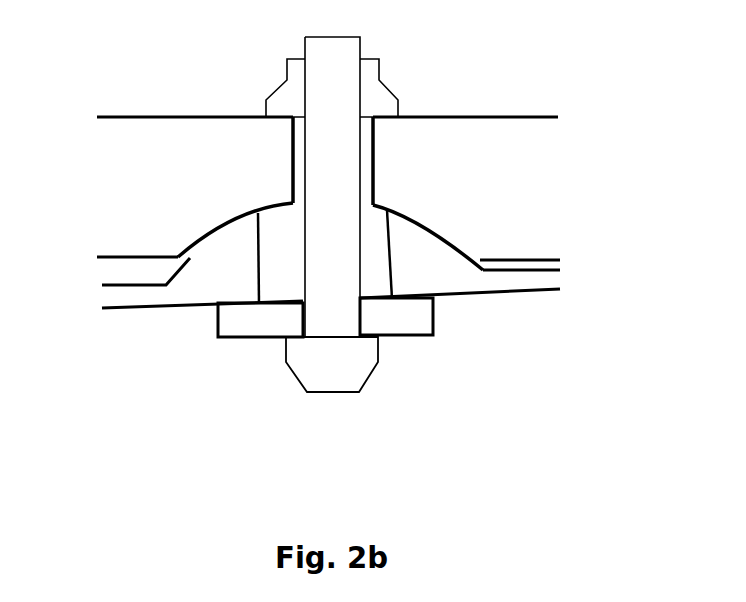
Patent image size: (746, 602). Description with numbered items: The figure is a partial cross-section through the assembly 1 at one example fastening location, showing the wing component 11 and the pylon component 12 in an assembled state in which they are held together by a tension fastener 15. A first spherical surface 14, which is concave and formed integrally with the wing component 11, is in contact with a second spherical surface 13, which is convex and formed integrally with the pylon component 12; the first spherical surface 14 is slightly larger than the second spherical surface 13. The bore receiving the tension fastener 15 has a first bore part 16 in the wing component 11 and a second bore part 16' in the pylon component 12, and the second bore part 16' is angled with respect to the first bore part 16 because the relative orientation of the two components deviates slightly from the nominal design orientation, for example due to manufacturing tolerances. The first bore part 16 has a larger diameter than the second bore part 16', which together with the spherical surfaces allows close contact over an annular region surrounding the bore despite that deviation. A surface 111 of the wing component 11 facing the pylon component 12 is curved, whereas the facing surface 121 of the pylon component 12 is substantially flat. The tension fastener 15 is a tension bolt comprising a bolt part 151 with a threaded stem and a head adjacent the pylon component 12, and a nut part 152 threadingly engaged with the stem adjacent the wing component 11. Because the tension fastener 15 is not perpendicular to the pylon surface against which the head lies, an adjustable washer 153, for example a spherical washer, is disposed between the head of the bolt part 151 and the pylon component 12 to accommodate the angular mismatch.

The assembly 1 is at (613, 93).
The wing component 11 is at (175, 193).
The surface of the wing component 111 is at (140, 257).
The pylon component 12 is at (137, 297).
The surface of the pylon component 121 is at (517, 272).
The second spherical surface 13 is at (443, 233).
The first spherical surface 14 is at (223, 218).
The tension fastener 15 is at (387, 363).
The bolt part 151 is at (338, 335).
The nut part 152 is at (284, 100).
The washer 153 is at (237, 320).
The first bore part 16 is at (424, 178).
The second bore part 16' is at (265, 280).